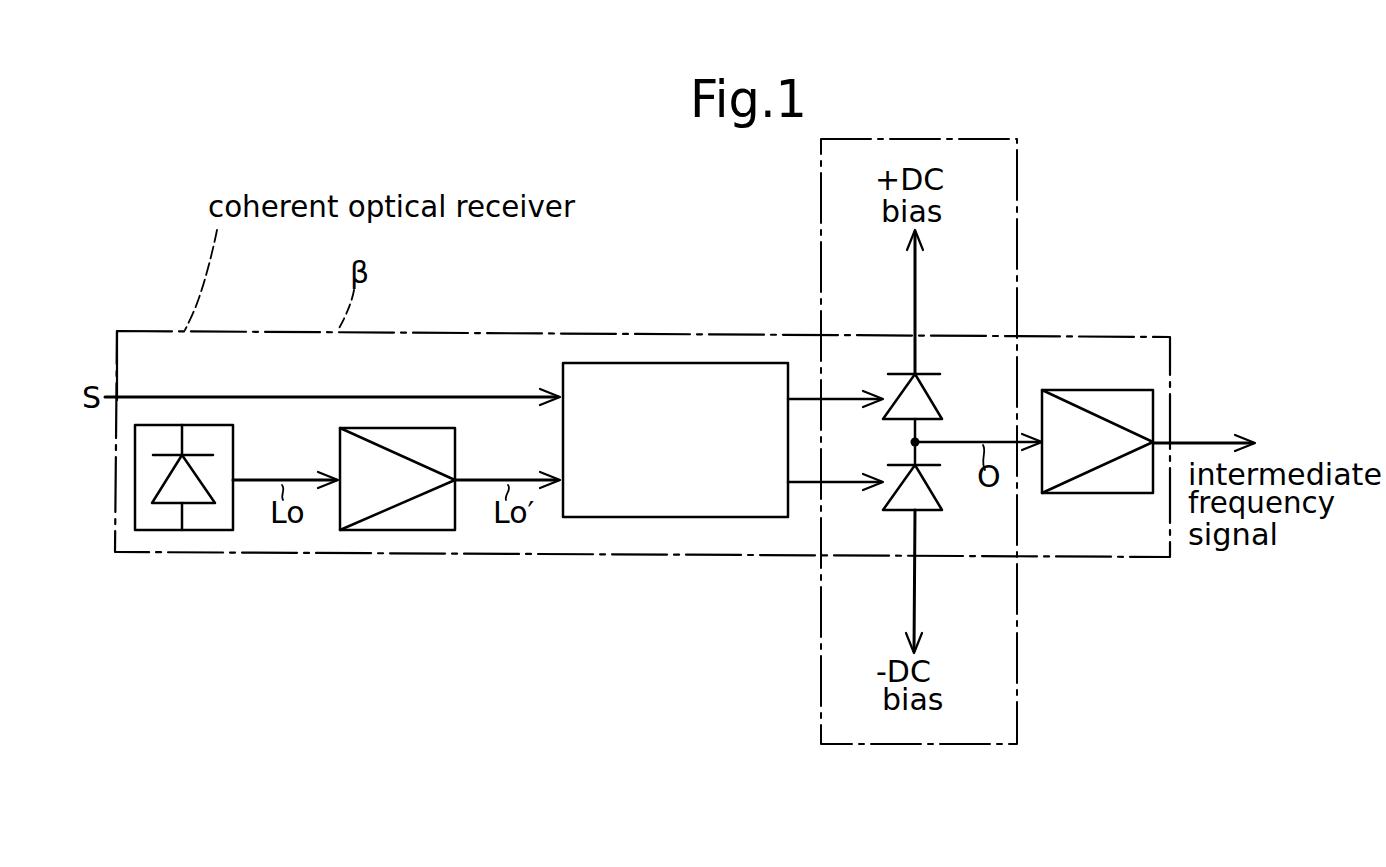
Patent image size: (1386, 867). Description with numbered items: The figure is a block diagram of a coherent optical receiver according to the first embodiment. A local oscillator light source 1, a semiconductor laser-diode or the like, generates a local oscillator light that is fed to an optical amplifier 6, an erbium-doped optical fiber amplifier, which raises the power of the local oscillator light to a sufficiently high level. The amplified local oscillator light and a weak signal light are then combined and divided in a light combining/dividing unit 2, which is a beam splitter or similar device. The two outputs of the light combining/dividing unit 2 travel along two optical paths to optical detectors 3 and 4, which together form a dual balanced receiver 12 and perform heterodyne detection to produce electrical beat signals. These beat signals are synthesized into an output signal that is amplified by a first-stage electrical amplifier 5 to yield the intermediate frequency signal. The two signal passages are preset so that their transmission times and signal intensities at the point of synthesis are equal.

The local oscillator light source 1 is at (160, 530).
The light combining/dividing unit 2 is at (648, 363).
The optical detector 3 is at (933, 400).
The optical detector 4 is at (935, 490).
The first-stage electrical amplifier 5 is at (1107, 390).
The optical amplifier 6 is at (398, 530).
The dual balanced receiver 12 is at (932, 139).